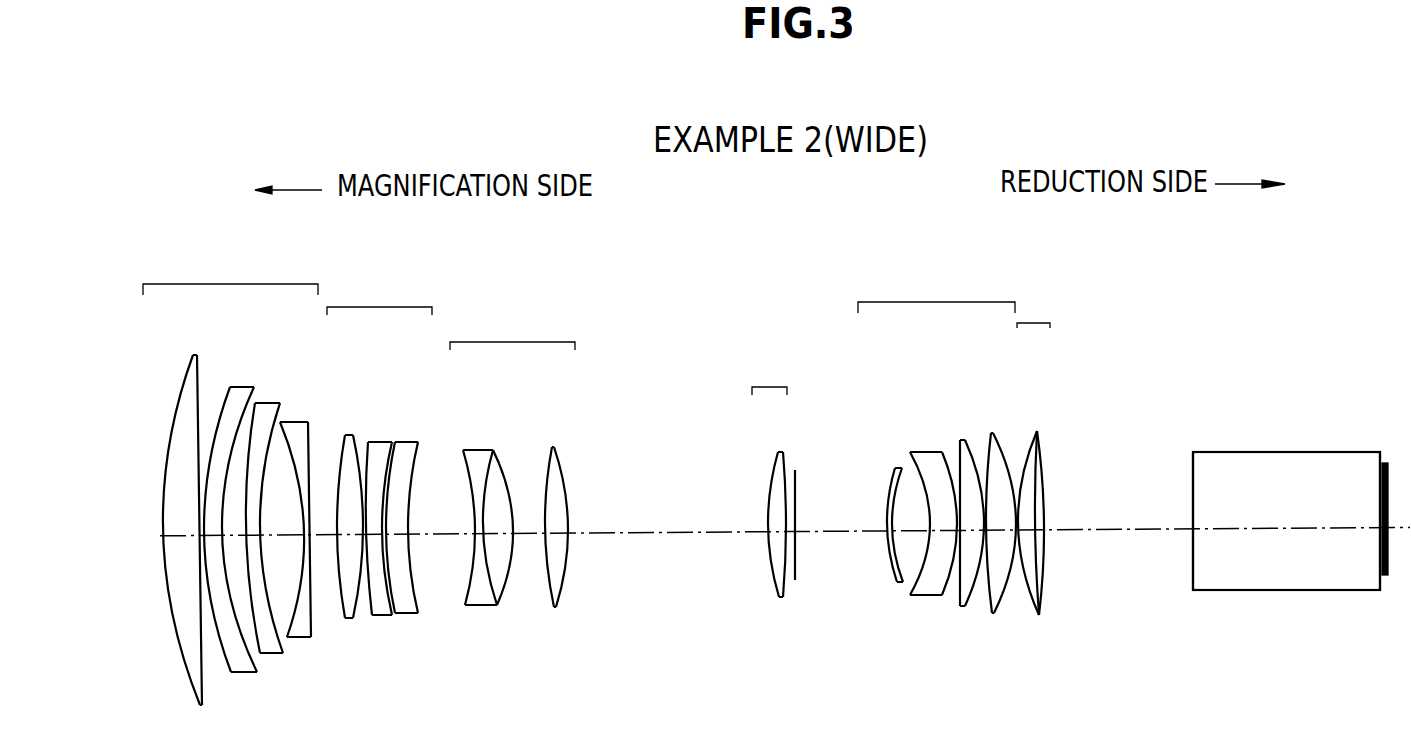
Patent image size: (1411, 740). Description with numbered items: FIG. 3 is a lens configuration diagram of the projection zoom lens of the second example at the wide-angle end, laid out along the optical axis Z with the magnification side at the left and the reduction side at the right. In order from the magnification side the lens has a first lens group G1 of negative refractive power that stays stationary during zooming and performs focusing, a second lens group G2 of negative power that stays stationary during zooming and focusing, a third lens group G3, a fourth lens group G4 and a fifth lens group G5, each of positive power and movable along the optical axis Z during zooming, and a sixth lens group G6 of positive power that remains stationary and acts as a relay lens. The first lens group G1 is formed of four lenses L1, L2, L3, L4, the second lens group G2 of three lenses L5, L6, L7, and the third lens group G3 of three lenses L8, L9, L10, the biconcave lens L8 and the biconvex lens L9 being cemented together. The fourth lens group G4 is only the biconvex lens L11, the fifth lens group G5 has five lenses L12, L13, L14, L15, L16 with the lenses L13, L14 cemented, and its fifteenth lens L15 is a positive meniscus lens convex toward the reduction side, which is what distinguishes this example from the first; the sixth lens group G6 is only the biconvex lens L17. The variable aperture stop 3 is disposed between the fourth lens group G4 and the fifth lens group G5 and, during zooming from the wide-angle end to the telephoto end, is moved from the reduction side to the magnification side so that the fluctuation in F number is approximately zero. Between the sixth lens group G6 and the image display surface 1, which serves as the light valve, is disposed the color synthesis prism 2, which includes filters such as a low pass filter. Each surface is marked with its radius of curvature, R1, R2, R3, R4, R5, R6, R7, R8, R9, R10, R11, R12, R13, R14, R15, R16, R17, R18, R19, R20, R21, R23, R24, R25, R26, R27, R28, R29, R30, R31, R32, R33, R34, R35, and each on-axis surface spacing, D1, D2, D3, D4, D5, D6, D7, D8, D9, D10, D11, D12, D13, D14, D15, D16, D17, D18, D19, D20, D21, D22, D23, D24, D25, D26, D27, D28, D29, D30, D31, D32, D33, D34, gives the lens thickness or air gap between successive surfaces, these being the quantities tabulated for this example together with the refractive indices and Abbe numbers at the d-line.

The image display surface 1 is at (1388, 560).
The color synthesis prism 2 is at (1278, 521).
The variable aperture stop 3 is at (797, 575).
The optical axis Z is at (690, 564).
The first lens group G1 is at (230, 276).
The second lens group G2 is at (379, 297).
The third lens group G3 is at (512, 331).
The fourth lens group G4 is at (769, 374).
The fifth lens group G5 is at (936, 292).
The sixth lens group G6 is at (1034, 311).
The first lens L1 is at (165, 545).
The second lens L2 is at (231, 519).
The third lens L3 is at (275, 513).
The fourth lens L4 is at (310, 529).
The fifth lens L5 is at (347, 513).
The sixth lens L6 is at (394, 523).
The seventh lens L7 is at (428, 513).
The eighth lens L8 is at (476, 523).
The ninth lens L9 is at (514, 530).
The tenth lens L10 is at (581, 529).
The eleventh lens L11 is at (760, 515).
The twelfth lens L12 is at (870, 522).
The thirteenth lens L13 is at (902, 512).
The fourteenth lens L14 is at (953, 500).
The fifteenth lens L15 is at (998, 516).
The sixteenth lens L16 is at (1035, 512).
The seventeenth lens L17 is at (1070, 545).
The radius of curvature of lens surface R1 is at (166, 550).
The radius of curvature of lens surface R2 is at (203, 525).
The radius of curvature of lens surface R3 is at (224, 398).
The radius of curvature of lens surface R4 is at (234, 440).
The radius of curvature of lens surface R5 is at (250, 458).
The radius of curvature of lens surface R6 is at (273, 430).
The radius of curvature of lens surface R7 is at (288, 440).
The radius of curvature of lens surface R8 is at (309, 450).
The radius of curvature of lens surface R9 is at (342, 440).
The radius of curvature of lens surface R10 is at (355, 440).
The radius of curvature of lens surface R11 is at (369, 442).
The radius of curvature of lens surface R12 is at (390, 448).
The radius of curvature of lens surface R13 is at (395, 442).
The radius of curvature of lens surface R14 is at (418, 445).
The radius of curvature of lens surface R15 is at (466, 462).
The radius of curvature of lens surface R16 is at (493, 452).
The radius of curvature of lens surface R17 is at (498, 460).
The radius of curvature of lens surface R18 is at (549, 466).
The radius of curvature of lens surface R19 is at (563, 480).
The radius of curvature of lens surface R20 is at (770, 490).
The radius of curvature of lens surface R21 is at (783, 462).
The radius of curvature of lens surface R23 is at (893, 470).
The radius of curvature of lens surface R24 is at (897, 485).
The radius of curvature of lens surface R25 is at (913, 460).
The radius of curvature of lens surface R26 is at (943, 455).
The radius of curvature of lens surface R27 is at (960, 442).
The radius of curvature of lens surface R28 is at (967, 445).
The radius of curvature of lens surface R29 is at (991, 433).
The radius of curvature of lens surface R30 is at (996, 440).
The radius of curvature of lens surface R31 is at (1037, 431).
The radius of curvature of lens surface R32 is at (1036, 450).
The radius of curvature of lens surface R33 is at (1042, 463).
The radius of curvature of surface R34 is at (1192, 453).
The radius of curvature of surface R35 is at (1381, 453).
The on-axis surface spacing D1 is at (185, 540).
The on-axis surface spacing D2 is at (202, 548).
The on-axis surface spacing D3 is at (212, 560).
The on-axis surface spacing D4 is at (240, 508).
The on-axis surface spacing D5 is at (253, 528).
The on-axis surface spacing D6 is at (282, 540).
The on-axis surface spacing D7 is at (306, 548).
The on-axis surface spacing D8 is at (322, 560).
The on-axis surface spacing D9 is at (350, 560).
The on-axis surface spacing D10 is at (366, 560).
The on-axis surface spacing D11 is at (374, 510).
The on-axis surface spacing D12 is at (384, 548).
The on-axis surface spacing D13 is at (398, 527).
The on-axis surface spacing D14 is at (440, 535).
The on-axis surface spacing D15 is at (480, 580).
The on-axis surface spacing D16 is at (498, 553).
The on-axis surface spacing D17 is at (530, 528).
The on-axis surface spacing D18 is at (556, 535).
The on-axis surface spacing D19 is at (698, 543).
The on-axis surface spacing D20 is at (777, 520).
The on-axis surface spacing D21 is at (790, 540).
The on-axis surface spacing D22 is at (797, 538).
The on-axis surface spacing D23 is at (889, 522).
The on-axis surface spacing D24 is at (905, 515).
The on-axis surface spacing D25 is at (940, 536).
The on-axis surface spacing D26 is at (958, 548).
The on-axis surface spacing D27 is at (972, 560).
The on-axis surface spacing D28 is at (988, 540).
The on-axis surface spacing D29 is at (1000, 520).
The on-axis surface spacing D30 is at (1016, 535).
The on-axis surface spacing D31 is at (1025, 518).
The on-axis surface spacing D32 is at (1040, 536).
The on-axis surface spacing D33 is at (1132, 517).
The on-axis surface spacing D34 is at (1263, 528).